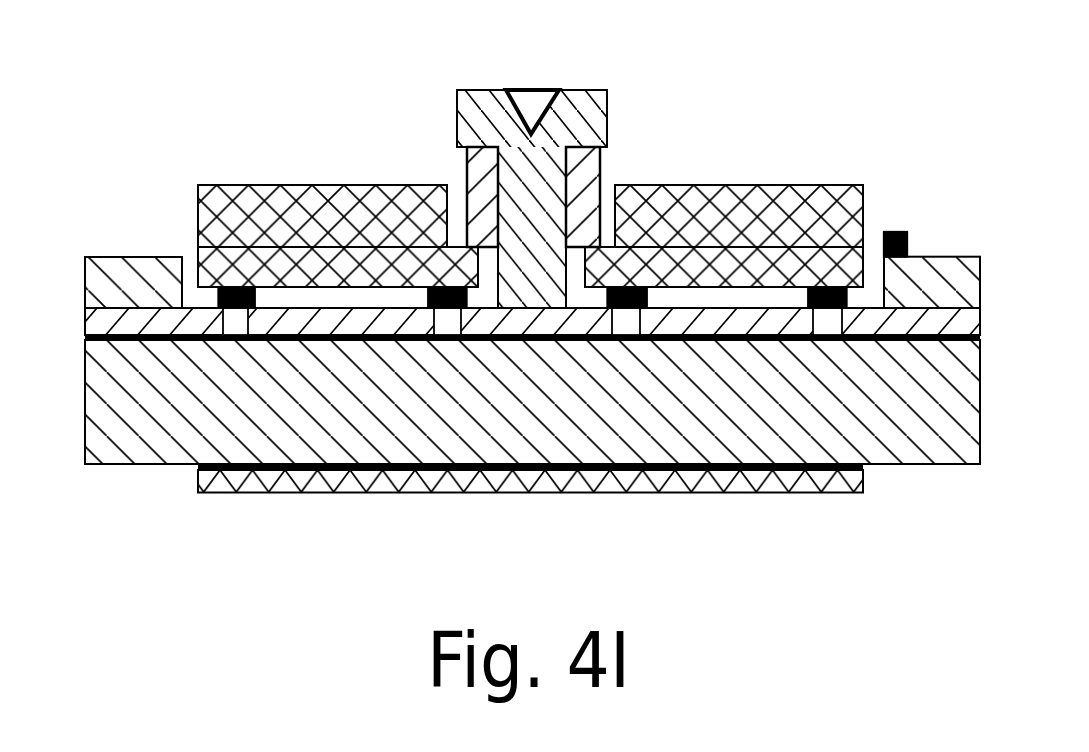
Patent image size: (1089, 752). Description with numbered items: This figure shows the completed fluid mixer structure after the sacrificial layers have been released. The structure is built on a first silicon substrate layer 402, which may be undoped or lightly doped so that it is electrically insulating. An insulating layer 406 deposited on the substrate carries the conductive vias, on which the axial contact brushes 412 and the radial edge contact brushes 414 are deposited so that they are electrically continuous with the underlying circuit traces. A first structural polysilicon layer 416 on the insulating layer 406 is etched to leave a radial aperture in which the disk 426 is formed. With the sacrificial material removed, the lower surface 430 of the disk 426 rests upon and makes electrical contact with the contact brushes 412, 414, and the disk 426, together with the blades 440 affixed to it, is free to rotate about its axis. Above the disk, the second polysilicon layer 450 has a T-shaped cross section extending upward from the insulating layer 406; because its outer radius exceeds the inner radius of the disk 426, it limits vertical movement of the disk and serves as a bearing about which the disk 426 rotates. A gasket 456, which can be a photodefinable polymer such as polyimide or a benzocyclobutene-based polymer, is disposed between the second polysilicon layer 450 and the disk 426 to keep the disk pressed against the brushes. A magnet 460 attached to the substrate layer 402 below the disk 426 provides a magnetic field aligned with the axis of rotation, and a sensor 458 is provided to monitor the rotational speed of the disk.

The first silicon substrate layer 402 is at (968, 398).
The insulating layer 406 is at (960, 322).
The axial contact brushes 412 is at (462, 300).
The radial edge contact brushes 414 is at (233, 308).
The poly 1 layer 416 is at (952, 287).
The disk 426 is at (679, 268).
The lower surface 430 is at (741, 292).
The blades 440 is at (310, 198).
The poly 2 layer 450 is at (573, 110).
The gasket 456 is at (590, 175).
The sensor 458 is at (907, 239).
The magnet 460 is at (317, 483).